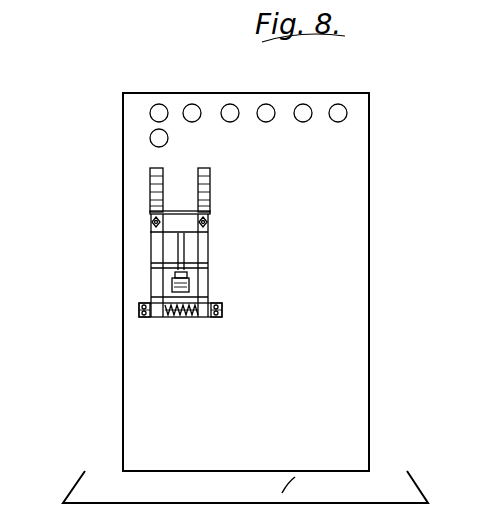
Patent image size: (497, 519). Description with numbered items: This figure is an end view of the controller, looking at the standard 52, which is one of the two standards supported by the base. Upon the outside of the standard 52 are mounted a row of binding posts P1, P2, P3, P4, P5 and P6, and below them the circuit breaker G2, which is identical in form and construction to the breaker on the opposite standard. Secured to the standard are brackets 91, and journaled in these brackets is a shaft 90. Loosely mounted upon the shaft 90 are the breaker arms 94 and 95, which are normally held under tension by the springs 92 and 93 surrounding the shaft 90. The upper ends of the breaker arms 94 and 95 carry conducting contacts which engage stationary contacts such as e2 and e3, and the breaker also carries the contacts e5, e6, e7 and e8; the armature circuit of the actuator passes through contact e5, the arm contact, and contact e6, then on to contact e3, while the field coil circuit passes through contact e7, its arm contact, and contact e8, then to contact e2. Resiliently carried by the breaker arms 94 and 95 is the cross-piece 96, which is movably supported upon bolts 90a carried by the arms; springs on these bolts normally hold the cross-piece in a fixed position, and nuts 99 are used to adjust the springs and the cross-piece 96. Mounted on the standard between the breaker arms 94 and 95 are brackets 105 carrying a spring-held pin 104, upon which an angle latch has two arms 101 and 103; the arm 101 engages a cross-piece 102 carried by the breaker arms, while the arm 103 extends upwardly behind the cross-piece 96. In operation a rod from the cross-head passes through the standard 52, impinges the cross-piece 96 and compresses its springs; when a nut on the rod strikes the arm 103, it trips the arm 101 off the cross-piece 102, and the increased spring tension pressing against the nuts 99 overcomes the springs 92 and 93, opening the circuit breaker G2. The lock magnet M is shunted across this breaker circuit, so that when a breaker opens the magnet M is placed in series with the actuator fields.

The standard 52 is at (246, 282).
The binding post P1 is at (340, 109).
The binding post P2 is at (305, 110).
The binding post P3 is at (267, 112).
The binding post P4 is at (230, 112).
The binding post P5 is at (192, 110).
The binding post P6 is at (160, 109).
The contact e2 is at (164, 183).
The contact e3 is at (213, 188).
The contact e5 is at (166, 178).
The contact e6 is at (164, 199).
The contact e7 is at (214, 174).
The contact e8 is at (213, 201).
The cross-piece 96 is at (210, 216).
The bolt 90a is at (155, 227).
The lock magnet M is at (179, 225).
The nut 99 is at (157, 228).
The latch arm 103 is at (183, 240).
The latch arm 101 is at (150, 268).
The cross-piece 102 is at (196, 268).
The spring-held pin 104 is at (189, 276).
The bracket 105 is at (150, 297).
The shaft 90 is at (222, 311).
The bracket 91 is at (140, 313).
The spring 92 is at (170, 318).
The spring 93 is at (190, 318).
The breaker arm 94 is at (153, 317).
The breaker arm 95 is at (202, 317).
The circuit breaker G2 is at (213, 365).